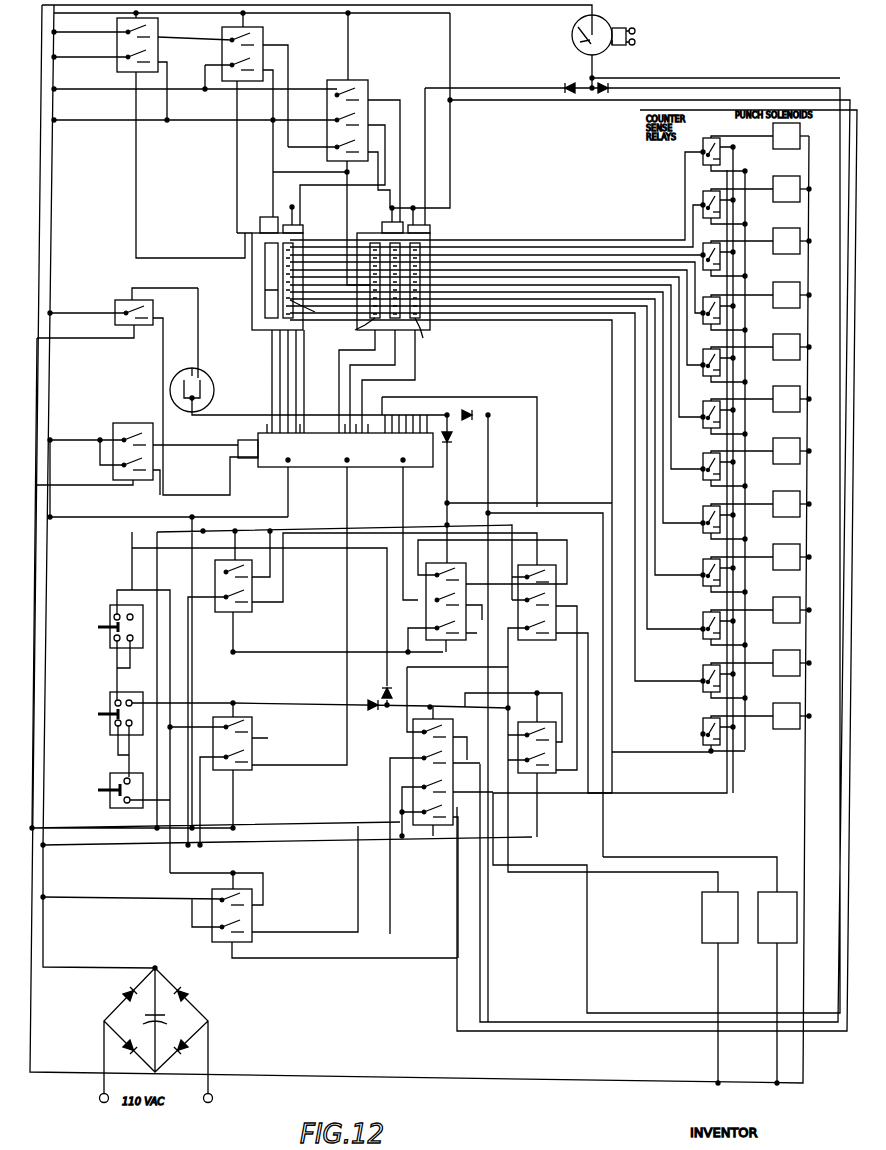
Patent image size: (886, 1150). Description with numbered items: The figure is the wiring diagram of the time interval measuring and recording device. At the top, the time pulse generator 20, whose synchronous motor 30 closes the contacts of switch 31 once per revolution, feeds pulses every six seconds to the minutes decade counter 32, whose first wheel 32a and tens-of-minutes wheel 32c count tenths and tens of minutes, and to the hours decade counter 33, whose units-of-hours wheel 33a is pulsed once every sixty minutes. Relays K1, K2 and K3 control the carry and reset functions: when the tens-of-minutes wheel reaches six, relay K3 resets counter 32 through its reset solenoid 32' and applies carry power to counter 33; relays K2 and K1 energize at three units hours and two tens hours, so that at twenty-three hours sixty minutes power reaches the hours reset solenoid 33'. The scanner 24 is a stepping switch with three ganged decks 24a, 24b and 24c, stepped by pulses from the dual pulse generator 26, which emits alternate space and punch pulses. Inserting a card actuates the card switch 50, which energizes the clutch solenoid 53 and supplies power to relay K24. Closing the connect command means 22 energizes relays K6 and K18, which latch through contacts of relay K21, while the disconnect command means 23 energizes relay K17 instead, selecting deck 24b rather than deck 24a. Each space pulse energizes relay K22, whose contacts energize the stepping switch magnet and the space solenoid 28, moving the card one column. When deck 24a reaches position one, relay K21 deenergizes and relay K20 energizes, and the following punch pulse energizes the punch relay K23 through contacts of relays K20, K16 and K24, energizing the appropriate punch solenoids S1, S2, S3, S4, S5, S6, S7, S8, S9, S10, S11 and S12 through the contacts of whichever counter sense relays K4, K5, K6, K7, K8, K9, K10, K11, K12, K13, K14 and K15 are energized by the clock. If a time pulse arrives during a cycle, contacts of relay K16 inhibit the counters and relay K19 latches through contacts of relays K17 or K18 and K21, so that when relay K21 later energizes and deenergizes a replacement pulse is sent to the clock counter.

The relay K-1 K1 is at (160, 32).
The relay K-2 K2 is at (265, 38).
The relay K-3 K3 is at (360, 80).
The counter sensing relay K4 is at (722, 248).
The counter sensing relay K5 is at (722, 302).
The counter sensing relay K6 is at (722, 354).
The counter sensing relay K7 is at (722, 406).
The counter sensing relay K8 is at (722, 458).
The counter sensing relay K9 is at (722, 511).
The counter sensing relay K10 is at (722, 564).
The counter sensing relay K11 is at (722, 617).
The counter sensing relay K12 is at (722, 670).
The counter sensing relay K13 is at (722, 723).
The counter sensing relay K14 is at (722, 196).
The counter sensing relay K15 is at (722, 143).
The relay K16 is at (412, 742).
The relay K17 is at (247, 775).
The relay K18 is at (246, 612).
The relay K19 is at (517, 748).
The relay K20 is at (466, 600).
The relay K21 is at (568, 573).
The relay K22 is at (114, 427).
The punch relay K23 is at (114, 304).
The relay K24 is at (254, 922).
The punch solenoid S1 is at (792, 241).
The punch solenoid S2 is at (792, 295).
The punch solenoid S3 is at (792, 347).
The punch solenoid S4 is at (792, 399).
The punch solenoid S5 is at (792, 451).
The punch solenoid S6 is at (792, 504).
The punch solenoid S7 is at (792, 557).
The punch solenoid S8 is at (792, 610).
The punch solenoid S9 is at (792, 663).
The punch solenoid S10 is at (792, 716).
The punch solenoid S11 is at (792, 189).
The punch solenoid S12 is at (791, 136).
The time pulse generator 20 is at (606, 20).
The connect command means 22 is at (124, 702).
The disconnect command means 23 is at (293, 734).
The scanner 24 is at (433, 457).
The stepping switch deck 24a is at (278, 462).
The stepping switch deck 24b is at (338, 462).
The stepping switch deck 24c is at (408, 462).
The dual pulse generator 26 is at (214, 382).
The space solenoid 28 is at (765, 943).
The synchronous motor 30 is at (614, 48).
The switch 31 is at (578, 45).
The minutes decade counter 32 is at (408, 286).
The reset solenoid of counter 32 32' is at (390, 160).
The first wheel of counter 32 32a is at (430, 334).
The tens-of-minutes wheel 32c is at (352, 330).
The hours decade counter 33 is at (315, 291).
The reset solenoid of counter 33 33' is at (271, 213).
The units-of-hours wheel 33a is at (309, 314).
The card switch 50 is at (113, 785).
The clutch solenoid 53 is at (702, 930).